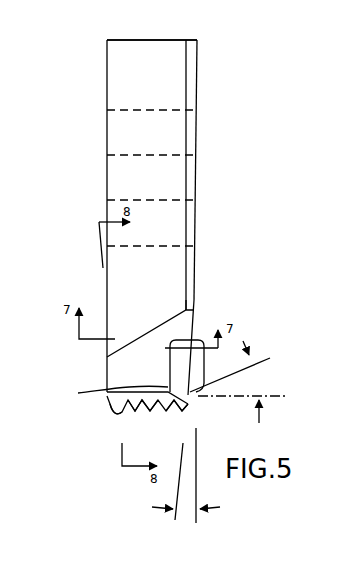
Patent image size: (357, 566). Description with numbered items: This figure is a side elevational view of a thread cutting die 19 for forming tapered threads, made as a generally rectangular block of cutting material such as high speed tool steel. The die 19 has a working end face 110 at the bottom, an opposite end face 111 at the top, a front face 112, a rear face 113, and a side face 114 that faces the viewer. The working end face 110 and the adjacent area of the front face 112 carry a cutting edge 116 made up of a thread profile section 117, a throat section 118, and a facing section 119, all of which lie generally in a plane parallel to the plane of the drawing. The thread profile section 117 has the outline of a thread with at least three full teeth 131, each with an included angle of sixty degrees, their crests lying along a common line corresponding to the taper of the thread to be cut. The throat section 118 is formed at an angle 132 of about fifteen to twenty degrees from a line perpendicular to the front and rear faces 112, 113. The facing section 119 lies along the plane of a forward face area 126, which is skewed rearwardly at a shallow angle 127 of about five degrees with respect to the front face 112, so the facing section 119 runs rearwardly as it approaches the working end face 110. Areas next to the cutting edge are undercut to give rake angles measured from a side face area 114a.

The opposite end face 111 is at (148, 40).
The die 19 is at (203, 146).
The front face 112 is at (197, 180).
The rear face 113 is at (107, 183).
The side face 114 is at (167, 266).
The side face area 114a is at (125, 365).
The forward face area 126 is at (200, 323).
The facing section 119 is at (202, 358).
The teeth 131 is at (80, 392).
The working end face 110 is at (128, 416).
The cutting edge 116 is at (123, 416).
The thread profile section 117 is at (163, 414).
The throat section 118 is at (170, 418).
The angle 132 is at (237, 382).
The shallow angle 127 is at (187, 513).